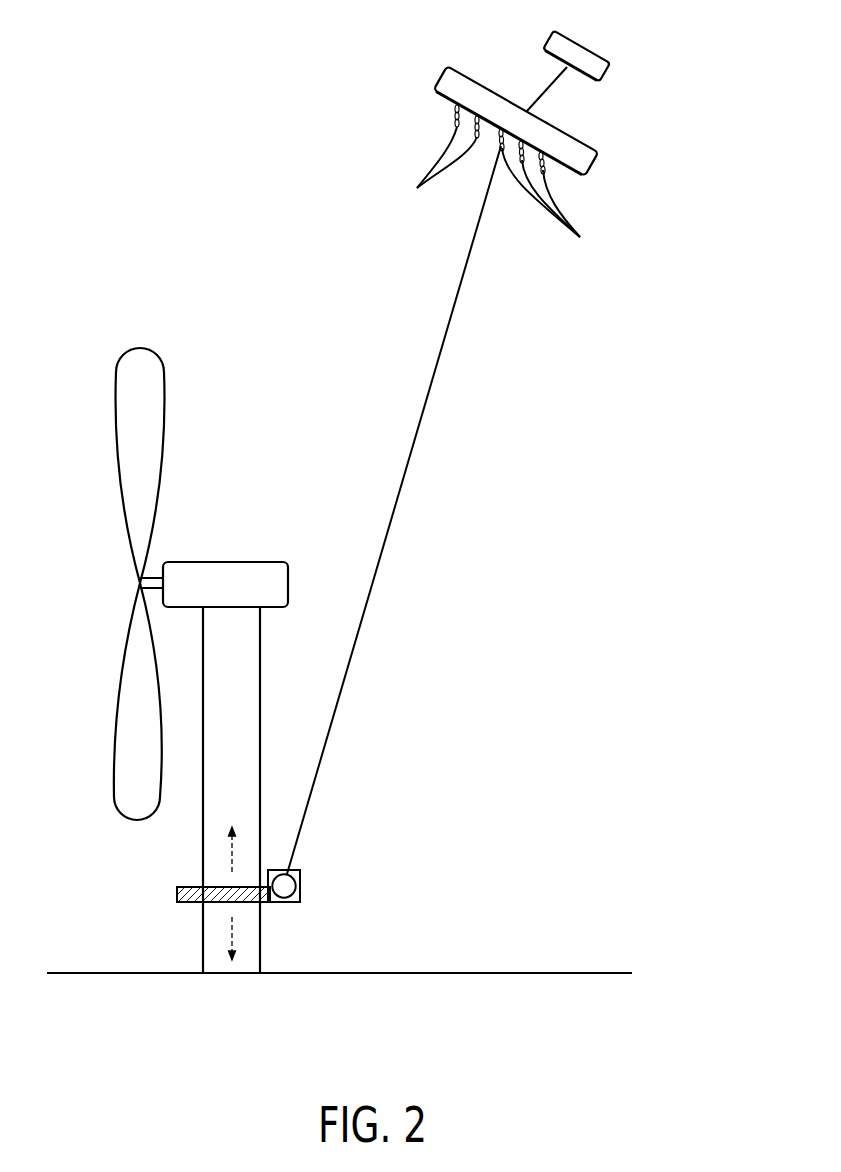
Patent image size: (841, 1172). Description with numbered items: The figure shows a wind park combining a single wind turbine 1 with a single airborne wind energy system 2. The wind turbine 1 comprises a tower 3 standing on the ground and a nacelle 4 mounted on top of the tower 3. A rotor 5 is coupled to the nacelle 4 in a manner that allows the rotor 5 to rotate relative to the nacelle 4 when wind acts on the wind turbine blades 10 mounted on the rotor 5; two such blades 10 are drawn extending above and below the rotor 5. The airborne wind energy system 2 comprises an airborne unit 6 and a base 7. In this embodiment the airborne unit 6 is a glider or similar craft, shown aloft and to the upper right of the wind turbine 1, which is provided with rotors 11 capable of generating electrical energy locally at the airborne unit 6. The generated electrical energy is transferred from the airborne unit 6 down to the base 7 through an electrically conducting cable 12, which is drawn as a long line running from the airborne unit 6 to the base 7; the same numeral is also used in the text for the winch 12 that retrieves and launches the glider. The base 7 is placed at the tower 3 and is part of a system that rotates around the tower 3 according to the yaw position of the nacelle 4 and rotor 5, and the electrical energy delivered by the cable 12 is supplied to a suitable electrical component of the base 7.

The wind turbine 1 is at (248, 490).
The airborne wind energy system 2 is at (332, 252).
The tower 3 is at (212, 928).
The nacelle 4 is at (278, 568).
The rotor 5 is at (140, 582).
The airborne unit 6 is at (640, 99).
The base 7 is at (248, 895).
The wind turbine blades 10 is at (123, 397).
The rotors 11 is at (497, 189).
The electrically conducting cable 12 is at (427, 395).